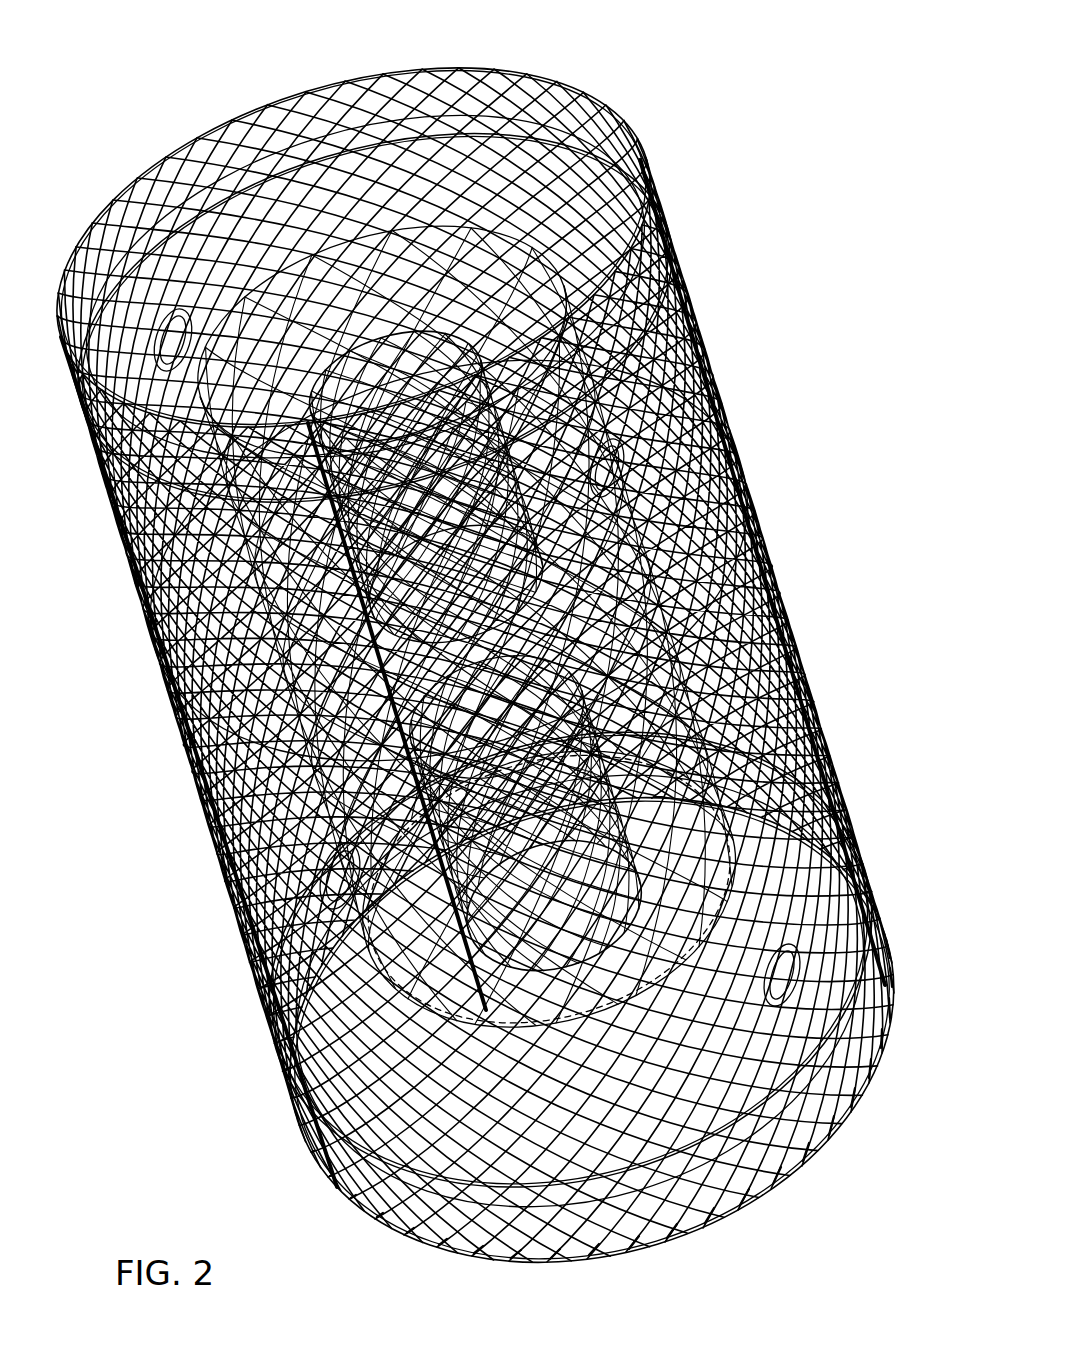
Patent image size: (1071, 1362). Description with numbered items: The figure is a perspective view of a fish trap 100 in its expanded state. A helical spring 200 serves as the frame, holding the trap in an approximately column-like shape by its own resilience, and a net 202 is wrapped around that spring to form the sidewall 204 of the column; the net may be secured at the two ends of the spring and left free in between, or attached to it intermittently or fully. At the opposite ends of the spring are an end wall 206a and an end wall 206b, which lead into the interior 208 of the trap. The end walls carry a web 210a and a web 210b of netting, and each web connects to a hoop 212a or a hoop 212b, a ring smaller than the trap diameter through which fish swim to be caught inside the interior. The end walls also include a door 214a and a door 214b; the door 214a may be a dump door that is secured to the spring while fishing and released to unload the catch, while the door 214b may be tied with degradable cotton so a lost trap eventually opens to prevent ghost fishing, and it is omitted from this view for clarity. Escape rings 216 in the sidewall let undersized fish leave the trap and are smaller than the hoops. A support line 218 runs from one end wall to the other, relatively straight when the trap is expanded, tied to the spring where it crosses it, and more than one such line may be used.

The fish trap 100 is at (143, 53).
The helical spring 200 is at (698, 352).
The net 202 is at (724, 448).
The sidewall 204 is at (750, 545).
The end wall 206a is at (828, 1140).
The end wall 206b is at (556, 95).
The interior 208 is at (755, 560).
The web 210a is at (775, 1182).
The web 210b is at (283, 62).
The hoop 212a is at (770, 897).
The hoop 212b is at (222, 580).
The door 214a is at (400, 912).
The door 214b is at (106, 183).
The escape rings 216 is at (700, 388).
The support line 218 is at (768, 612).